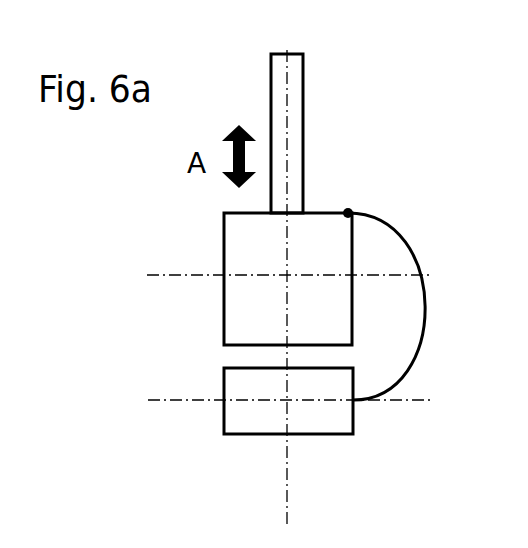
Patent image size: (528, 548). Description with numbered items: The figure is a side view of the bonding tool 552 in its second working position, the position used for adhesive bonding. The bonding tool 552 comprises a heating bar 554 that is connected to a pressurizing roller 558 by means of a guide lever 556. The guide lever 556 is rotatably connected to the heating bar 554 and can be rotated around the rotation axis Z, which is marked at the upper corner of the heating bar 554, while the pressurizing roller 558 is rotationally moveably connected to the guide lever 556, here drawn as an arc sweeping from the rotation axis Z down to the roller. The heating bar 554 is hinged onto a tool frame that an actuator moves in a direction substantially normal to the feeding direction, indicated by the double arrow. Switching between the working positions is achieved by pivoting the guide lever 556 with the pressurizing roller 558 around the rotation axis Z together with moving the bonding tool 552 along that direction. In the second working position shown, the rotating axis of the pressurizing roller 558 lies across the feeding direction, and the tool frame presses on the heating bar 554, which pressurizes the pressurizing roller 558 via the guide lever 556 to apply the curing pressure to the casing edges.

The bonding tool 552 is at (343, 153).
The heating bar 554 is at (248, 293).
The guide lever 556 is at (418, 350).
The pressurizing roller 558 is at (235, 390).
The rotation axis Z is at (355, 211).